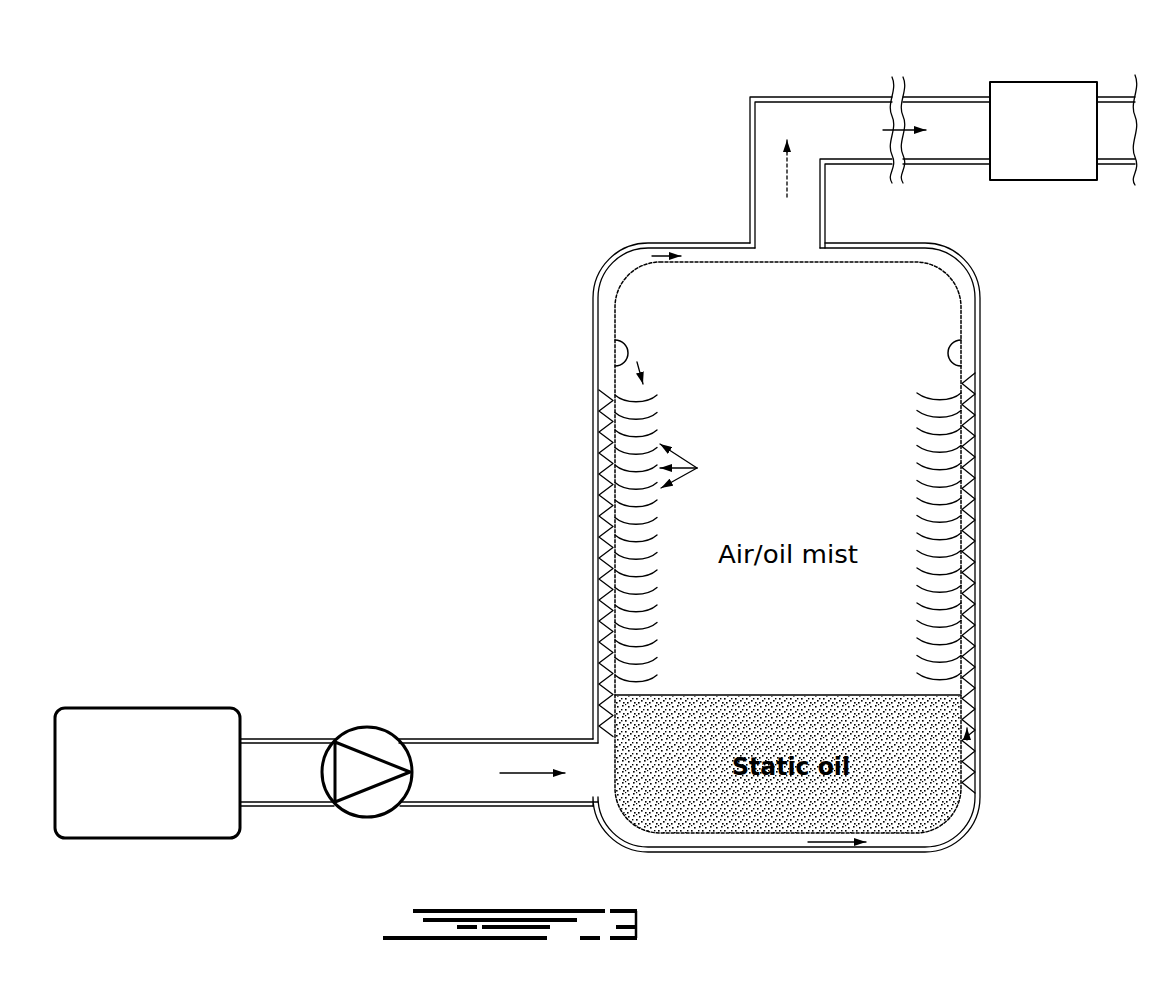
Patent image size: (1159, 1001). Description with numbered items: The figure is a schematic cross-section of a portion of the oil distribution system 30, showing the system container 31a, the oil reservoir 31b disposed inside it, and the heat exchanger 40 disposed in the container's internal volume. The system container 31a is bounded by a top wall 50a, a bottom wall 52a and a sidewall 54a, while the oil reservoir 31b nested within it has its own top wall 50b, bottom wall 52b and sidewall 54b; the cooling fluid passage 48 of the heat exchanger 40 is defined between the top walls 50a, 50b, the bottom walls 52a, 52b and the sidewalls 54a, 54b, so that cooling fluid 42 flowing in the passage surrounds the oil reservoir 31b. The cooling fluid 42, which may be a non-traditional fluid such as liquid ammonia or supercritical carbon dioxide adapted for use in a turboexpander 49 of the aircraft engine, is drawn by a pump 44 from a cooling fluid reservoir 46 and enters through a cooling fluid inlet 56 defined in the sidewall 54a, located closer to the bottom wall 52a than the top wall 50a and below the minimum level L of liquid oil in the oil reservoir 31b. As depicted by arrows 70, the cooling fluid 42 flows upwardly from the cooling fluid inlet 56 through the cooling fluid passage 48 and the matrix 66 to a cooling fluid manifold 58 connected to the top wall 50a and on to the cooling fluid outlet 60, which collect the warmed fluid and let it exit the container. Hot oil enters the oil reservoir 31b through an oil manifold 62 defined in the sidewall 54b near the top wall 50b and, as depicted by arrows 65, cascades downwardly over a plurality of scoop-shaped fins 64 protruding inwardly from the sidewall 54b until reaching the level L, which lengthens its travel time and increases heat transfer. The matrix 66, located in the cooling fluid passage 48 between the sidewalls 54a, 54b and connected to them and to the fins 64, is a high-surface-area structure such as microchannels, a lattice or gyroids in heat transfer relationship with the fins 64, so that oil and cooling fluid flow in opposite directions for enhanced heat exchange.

The oil distribution system 30 is at (283, 223).
The system container 31a is at (603, 277).
The oil reservoir 31b is at (938, 290).
The heat exchanger 40 is at (982, 412).
The cooling fluid 42 is at (450, 770).
The pump 44 is at (367, 818).
The cooling fluid reservoir 46 is at (143, 840).
The cooling fluid passage 48 is at (890, 251).
The turboexpander 49 is at (1043, 82).
The top wall 50a is at (677, 249).
The top wall 50b is at (732, 262).
The bottom wall 52a is at (712, 853).
The bottom wall 52b is at (780, 837).
The sidewall 54a is at (597, 332).
The sidewall 54b is at (613, 375).
The cooling fluid inlet 56 is at (596, 781).
The cooling fluid manifold 58 is at (810, 252).
The cooling fluid outlet 60 is at (748, 179).
The oil manifold 62 is at (630, 350).
The fins 64 is at (645, 427).
The arrows 65 is at (642, 372).
The matrix 66 is at (597, 505).
The arrows 70 is at (790, 172).
The minimum level of liquid oil L is at (853, 695).